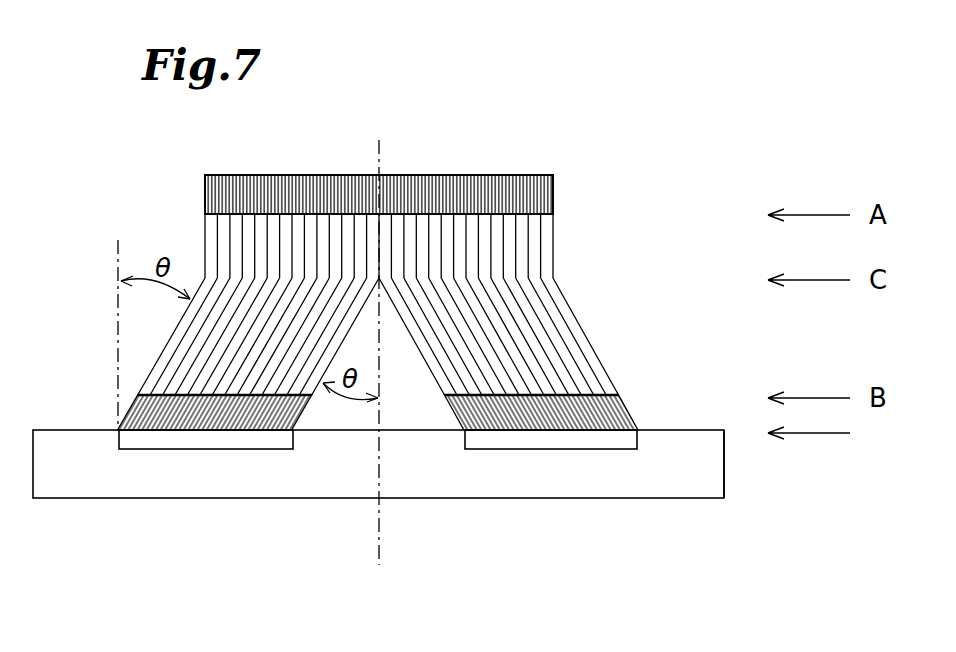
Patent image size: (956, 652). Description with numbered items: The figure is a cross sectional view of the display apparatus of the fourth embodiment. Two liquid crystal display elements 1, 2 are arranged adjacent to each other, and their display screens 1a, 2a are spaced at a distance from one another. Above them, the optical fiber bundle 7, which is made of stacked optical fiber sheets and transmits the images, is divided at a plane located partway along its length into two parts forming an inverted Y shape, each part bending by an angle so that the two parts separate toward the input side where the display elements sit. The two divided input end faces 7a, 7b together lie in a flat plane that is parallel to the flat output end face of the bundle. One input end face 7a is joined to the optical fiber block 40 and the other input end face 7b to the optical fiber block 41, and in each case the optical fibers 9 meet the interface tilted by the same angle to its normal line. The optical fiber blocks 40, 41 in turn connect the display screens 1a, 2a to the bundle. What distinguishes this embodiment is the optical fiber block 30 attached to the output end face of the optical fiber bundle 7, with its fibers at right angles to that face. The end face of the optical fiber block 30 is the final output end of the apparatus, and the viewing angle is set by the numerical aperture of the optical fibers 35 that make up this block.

The liquid crystal display element 1 is at (99, 498).
The display screen 1a is at (223, 449).
The liquid crystal display element 2 is at (700, 498).
The display screen 2a is at (571, 444).
The optical fiber bundle 7 is at (343, 304).
The input end face 7a is at (204, 388).
The input end face 7b is at (537, 395).
The optical fibers 9 is at (365, 234).
The optical fiber block 30 is at (553, 197).
The optical fibers 35 is at (477, 175).
The optical fiber block 40 is at (130, 408).
The optical fiber block 41 is at (632, 423).